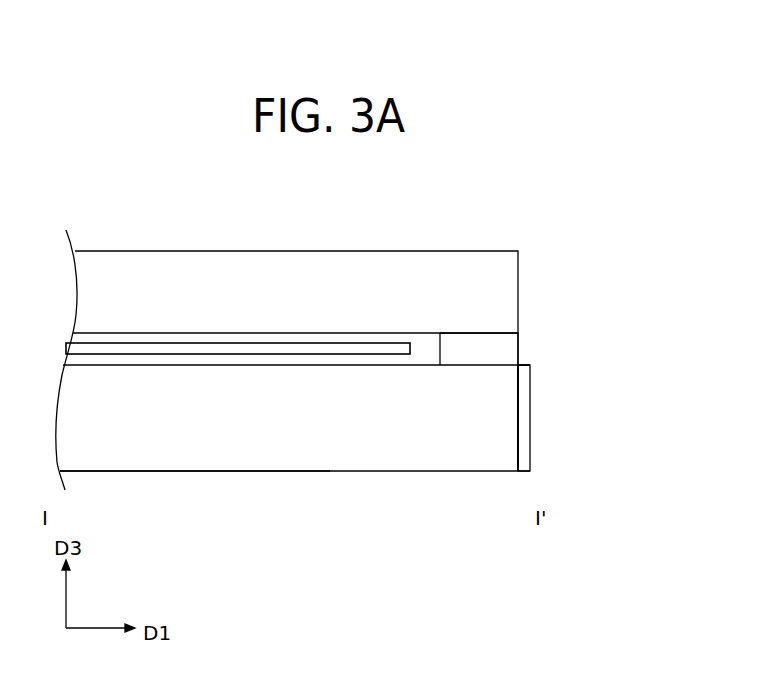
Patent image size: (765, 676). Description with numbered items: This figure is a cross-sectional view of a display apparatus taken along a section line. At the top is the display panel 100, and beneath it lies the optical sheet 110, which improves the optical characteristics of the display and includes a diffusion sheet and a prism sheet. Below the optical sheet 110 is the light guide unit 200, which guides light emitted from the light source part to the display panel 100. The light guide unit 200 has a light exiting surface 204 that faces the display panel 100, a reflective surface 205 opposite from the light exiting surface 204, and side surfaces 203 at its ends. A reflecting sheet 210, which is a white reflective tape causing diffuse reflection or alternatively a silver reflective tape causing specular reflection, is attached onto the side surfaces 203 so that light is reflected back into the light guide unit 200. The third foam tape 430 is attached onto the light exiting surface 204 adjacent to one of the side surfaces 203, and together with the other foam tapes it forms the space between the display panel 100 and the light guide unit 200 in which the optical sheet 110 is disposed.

The display panel 100 is at (322, 265).
The light exiting surface 204 is at (219, 365).
The third foam tape 430 is at (508, 350).
The optical sheet 110 is at (387, 350).
The light guide unit 200 is at (323, 453).
The reflective surface 205 is at (213, 471).
The reflecting sheet 210 is at (527, 390).
The side surfaces 203 is at (520, 435).